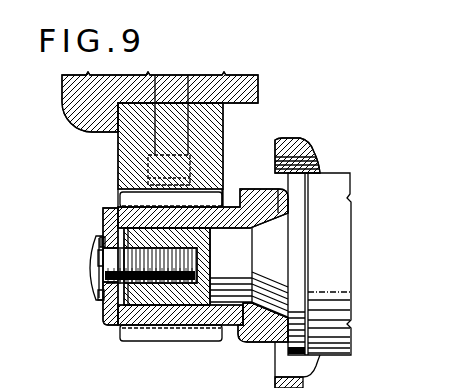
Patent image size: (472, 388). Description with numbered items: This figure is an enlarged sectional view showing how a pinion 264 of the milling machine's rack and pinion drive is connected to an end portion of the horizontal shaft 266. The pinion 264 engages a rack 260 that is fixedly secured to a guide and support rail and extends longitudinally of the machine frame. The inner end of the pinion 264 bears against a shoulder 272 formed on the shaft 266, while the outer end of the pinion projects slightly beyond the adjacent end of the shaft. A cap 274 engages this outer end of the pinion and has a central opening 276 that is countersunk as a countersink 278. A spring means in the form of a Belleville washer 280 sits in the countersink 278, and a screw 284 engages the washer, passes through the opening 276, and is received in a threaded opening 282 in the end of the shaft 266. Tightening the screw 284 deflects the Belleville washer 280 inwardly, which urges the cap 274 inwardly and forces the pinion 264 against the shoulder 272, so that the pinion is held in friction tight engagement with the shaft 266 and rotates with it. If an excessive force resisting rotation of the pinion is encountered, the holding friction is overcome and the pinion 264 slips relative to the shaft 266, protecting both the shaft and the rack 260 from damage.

The rack 260 is at (118, 153).
The pinion 264 is at (145, 315).
The horizontal shaft 266 is at (330, 182).
The shoulder 272 is at (270, 343).
The cap 274 is at (103, 218).
The central opening 276 is at (97, 297).
The countersink 278 is at (96, 295).
The Belleville washer 280 is at (98, 246).
The threaded opening 282 is at (190, 275).
The screw 284 is at (93, 258).